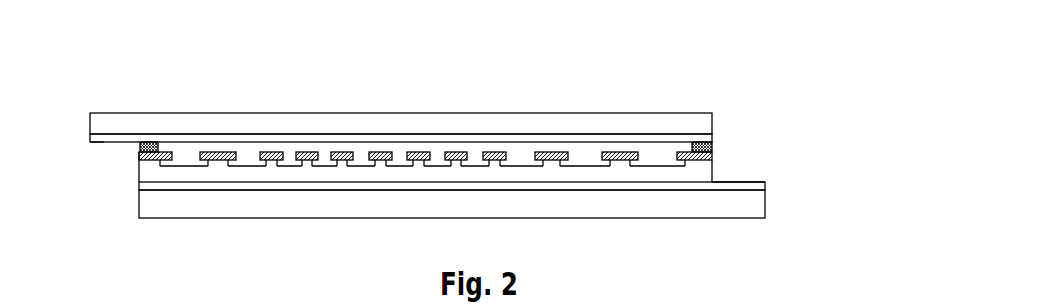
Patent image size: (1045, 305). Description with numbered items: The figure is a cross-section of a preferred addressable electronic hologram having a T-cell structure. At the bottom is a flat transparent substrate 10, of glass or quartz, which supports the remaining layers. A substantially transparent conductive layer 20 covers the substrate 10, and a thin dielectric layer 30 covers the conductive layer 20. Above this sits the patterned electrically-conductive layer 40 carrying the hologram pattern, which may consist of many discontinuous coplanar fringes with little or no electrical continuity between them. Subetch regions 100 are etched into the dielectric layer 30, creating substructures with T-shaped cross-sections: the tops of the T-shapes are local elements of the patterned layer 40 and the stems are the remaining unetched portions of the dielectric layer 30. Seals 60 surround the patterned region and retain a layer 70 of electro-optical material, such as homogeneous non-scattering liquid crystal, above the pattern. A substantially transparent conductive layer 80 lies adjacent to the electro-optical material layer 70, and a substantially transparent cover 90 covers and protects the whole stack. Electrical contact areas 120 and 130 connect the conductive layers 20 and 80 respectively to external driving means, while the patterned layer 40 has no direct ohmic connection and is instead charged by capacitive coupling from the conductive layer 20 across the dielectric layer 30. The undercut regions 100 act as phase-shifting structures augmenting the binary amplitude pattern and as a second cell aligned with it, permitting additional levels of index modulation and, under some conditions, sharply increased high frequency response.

The transparent substrate 10 is at (675, 208).
The transparent conductive layer 20 is at (603, 188).
The dielectric layer 30 is at (712, 155).
The patterned electrically-conductive layer 40 is at (690, 170).
The seals 60 is at (712, 147).
The electro-optical material layer 70 is at (190, 148).
The transparent conductive layer 80 is at (703, 137).
The transparent cover 90 is at (668, 124).
The subetch regions 100 is at (262, 166).
The electrical contact area 120 is at (742, 182).
The electrical contact area 130 is at (105, 141).